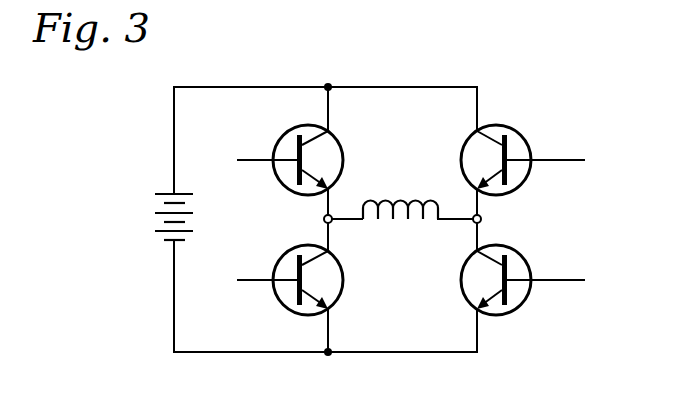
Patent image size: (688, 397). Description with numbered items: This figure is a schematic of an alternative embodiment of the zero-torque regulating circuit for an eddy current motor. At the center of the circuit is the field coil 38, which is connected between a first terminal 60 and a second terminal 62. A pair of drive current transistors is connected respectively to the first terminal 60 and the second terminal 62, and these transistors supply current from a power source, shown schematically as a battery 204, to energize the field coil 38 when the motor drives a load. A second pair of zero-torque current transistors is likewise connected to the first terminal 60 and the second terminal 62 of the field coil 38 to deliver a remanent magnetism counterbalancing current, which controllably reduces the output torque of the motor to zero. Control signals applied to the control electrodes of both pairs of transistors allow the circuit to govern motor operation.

The battery 204 is at (160, 194).
The first terminal 60 is at (323, 219).
The second terminal 62 is at (534, 206).
The field coil 38 is at (426, 168).